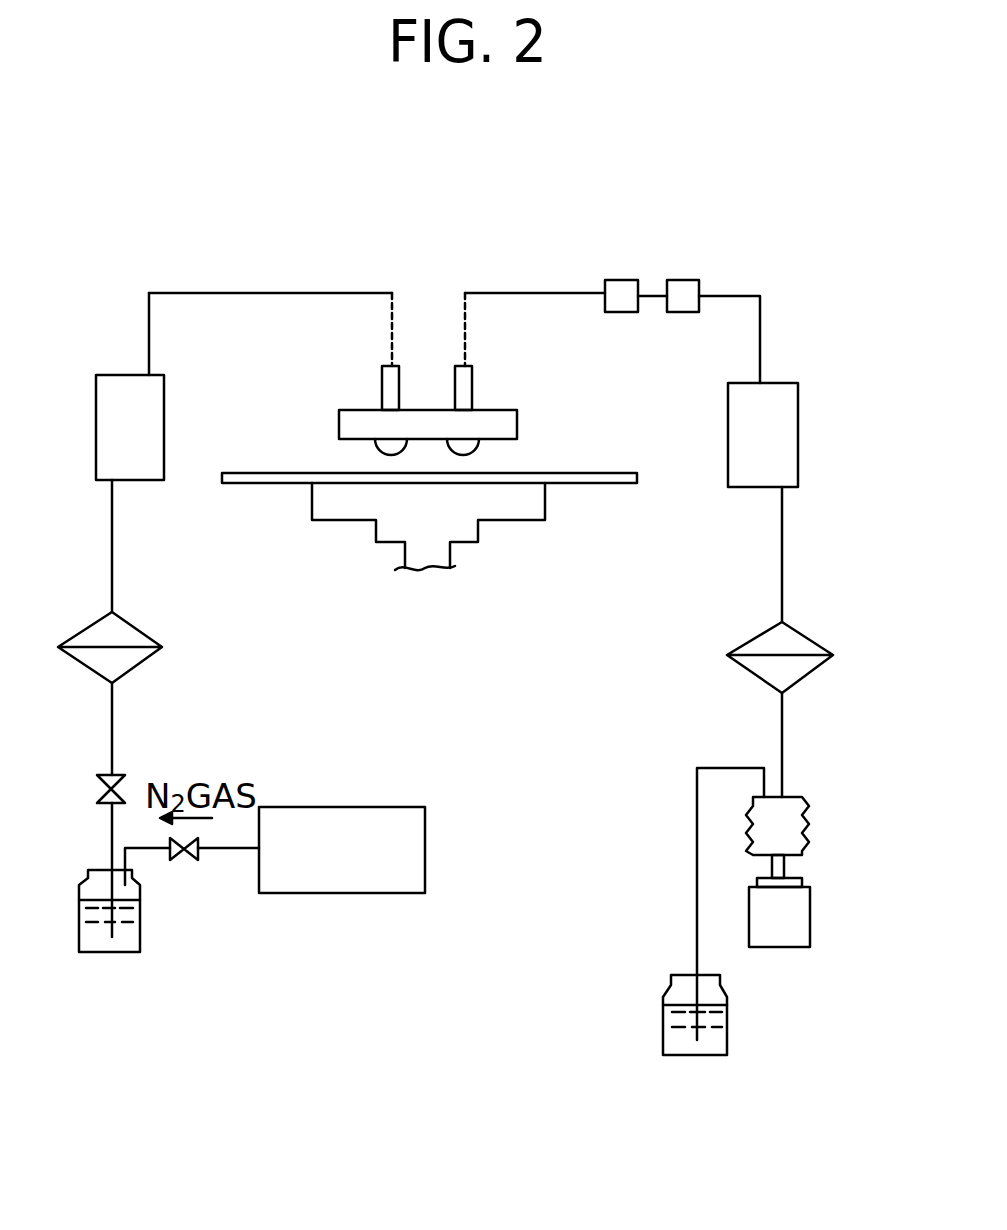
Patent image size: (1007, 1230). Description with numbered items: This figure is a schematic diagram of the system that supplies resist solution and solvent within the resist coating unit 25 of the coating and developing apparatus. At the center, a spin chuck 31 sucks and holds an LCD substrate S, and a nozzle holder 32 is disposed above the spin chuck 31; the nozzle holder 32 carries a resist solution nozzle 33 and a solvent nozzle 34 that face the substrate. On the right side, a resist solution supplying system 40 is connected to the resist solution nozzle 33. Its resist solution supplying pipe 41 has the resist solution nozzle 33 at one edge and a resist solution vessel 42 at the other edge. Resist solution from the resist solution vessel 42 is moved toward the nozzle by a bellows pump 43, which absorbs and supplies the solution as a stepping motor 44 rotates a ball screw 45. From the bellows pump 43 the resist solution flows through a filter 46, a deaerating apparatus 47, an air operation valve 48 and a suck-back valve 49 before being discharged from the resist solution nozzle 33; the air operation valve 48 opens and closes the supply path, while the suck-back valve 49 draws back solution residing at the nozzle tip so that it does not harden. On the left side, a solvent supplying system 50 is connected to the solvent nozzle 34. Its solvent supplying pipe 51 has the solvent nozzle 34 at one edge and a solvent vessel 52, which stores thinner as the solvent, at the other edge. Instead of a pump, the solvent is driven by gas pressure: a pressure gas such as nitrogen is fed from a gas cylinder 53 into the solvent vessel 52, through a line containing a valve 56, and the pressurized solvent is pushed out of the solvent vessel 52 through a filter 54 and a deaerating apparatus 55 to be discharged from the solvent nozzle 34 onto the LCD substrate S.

The resist coating unit 25 is at (453, 257).
The spin chuck 31 is at (528, 510).
The nozzle holder 32 is at (517, 420).
The resist solution nozzle 33 is at (480, 447).
The solvent nozzle 34 is at (375, 447).
The LCD substrate S is at (605, 487).
The resist solution supplying system 40 is at (757, 257).
The resist solution supplying pipe 41 is at (530, 292).
The resist solution vessel 42 is at (728, 1028).
The bellows pump 43 is at (810, 825).
The stepping motor 44 is at (811, 917).
The ball screw 45 is at (787, 863).
The filter 46 is at (812, 640).
The deaerating apparatus 47 is at (799, 435).
The air operation valve 48 is at (685, 280).
The suck-back valve 49 is at (622, 280).
The solvent supplying system 50 is at (137, 273).
The solvent supplying pipe 51 is at (297, 288).
The solvent vessel 52 is at (140, 928).
The gas cylinder 53 is at (338, 895).
The filter 54 is at (147, 657).
The deaerating apparatus 55 is at (95, 432).
The gas valve 56 is at (198, 853).